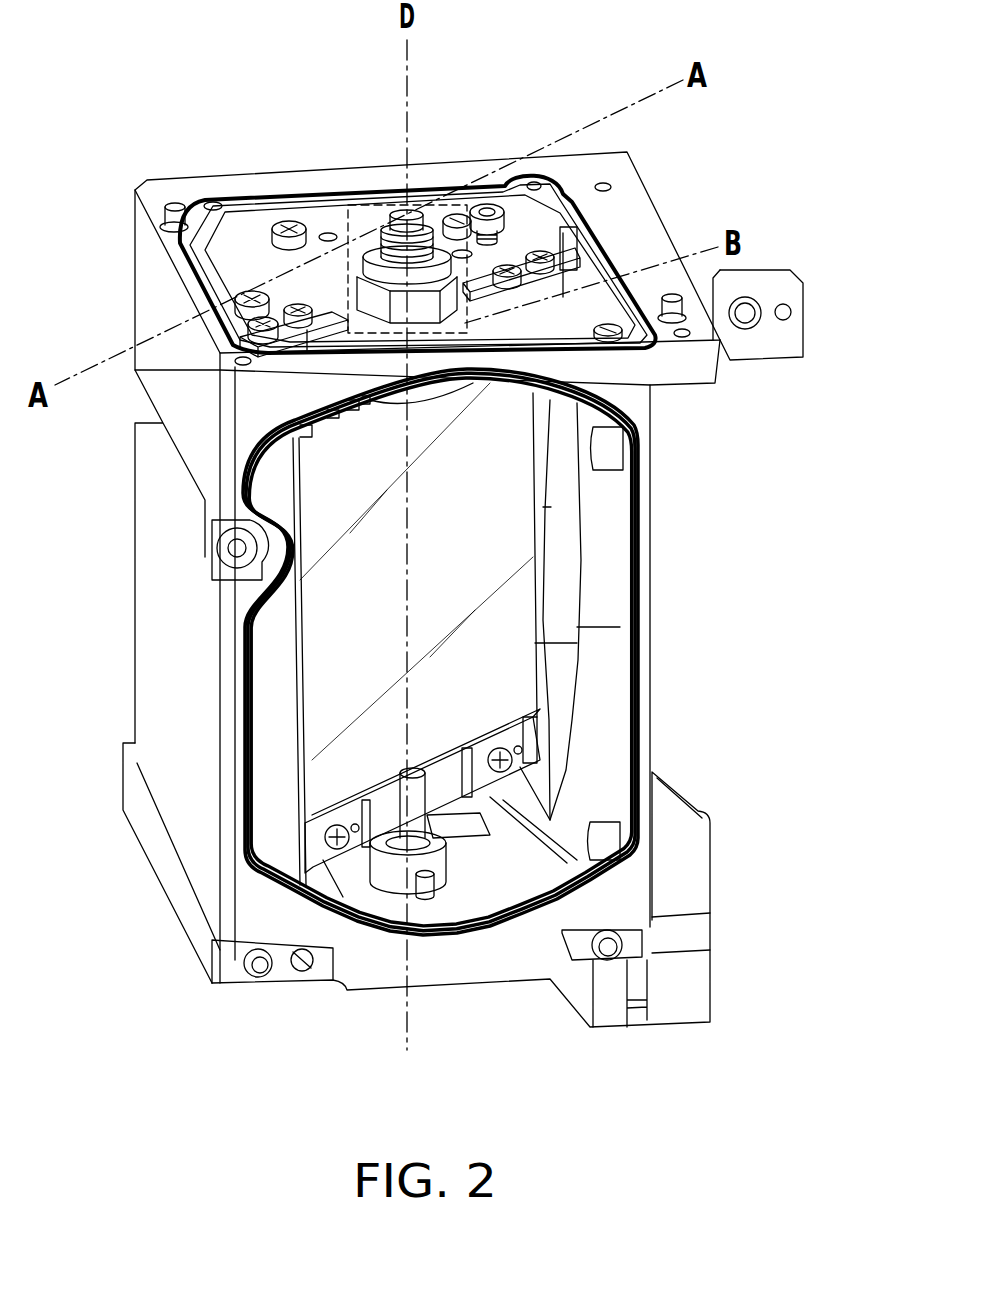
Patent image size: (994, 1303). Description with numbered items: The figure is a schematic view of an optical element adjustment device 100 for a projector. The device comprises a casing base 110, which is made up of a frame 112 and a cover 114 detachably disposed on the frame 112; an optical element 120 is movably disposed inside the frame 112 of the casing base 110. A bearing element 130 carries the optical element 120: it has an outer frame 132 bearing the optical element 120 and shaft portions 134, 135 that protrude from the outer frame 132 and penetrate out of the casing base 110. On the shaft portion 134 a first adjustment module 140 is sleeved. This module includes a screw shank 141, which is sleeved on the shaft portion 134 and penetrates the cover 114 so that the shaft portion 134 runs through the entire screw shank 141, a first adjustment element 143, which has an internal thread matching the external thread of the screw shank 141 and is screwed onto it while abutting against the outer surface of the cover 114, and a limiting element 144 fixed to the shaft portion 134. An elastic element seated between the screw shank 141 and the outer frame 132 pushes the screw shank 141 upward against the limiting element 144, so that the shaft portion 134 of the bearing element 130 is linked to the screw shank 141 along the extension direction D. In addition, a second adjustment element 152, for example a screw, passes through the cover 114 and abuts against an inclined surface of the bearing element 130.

The optical element adjustment device 100 is at (763, 1077).
The casing base 110 is at (489, 567).
The frame 112 is at (687, 372).
The cover 114 is at (580, 348).
The optical element 120 is at (495, 540).
The bearing element 130 is at (422, 902).
The outer frame 132 is at (482, 762).
The shaft portion 134 is at (413, 213).
The shaft portion 135 is at (413, 800).
The first adjustment module 140 is at (428, 199).
The screw shank 141 is at (366, 296).
The first adjustment element 143 is at (356, 292).
The limiting element 144 is at (421, 212).
The second adjustment element 152 is at (600, 203).